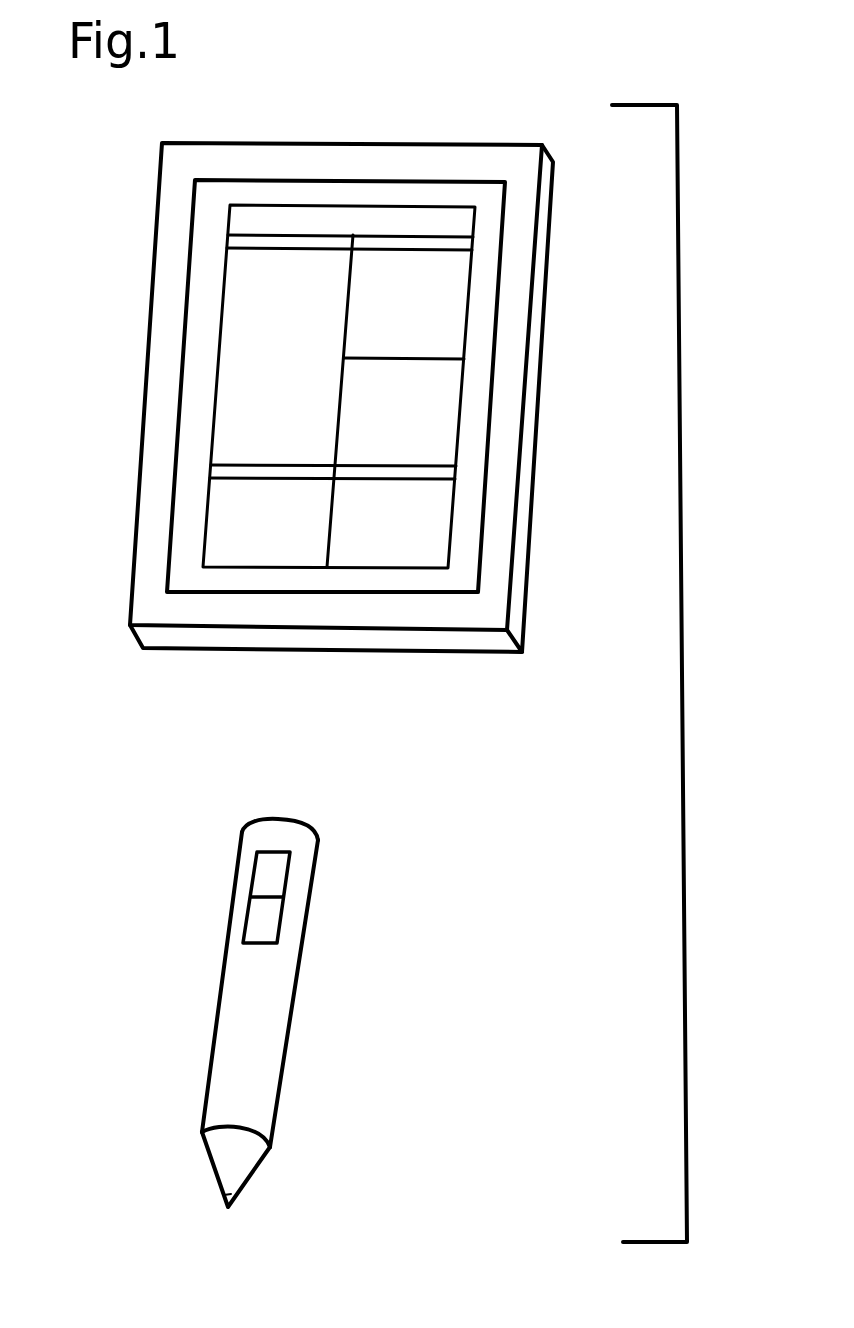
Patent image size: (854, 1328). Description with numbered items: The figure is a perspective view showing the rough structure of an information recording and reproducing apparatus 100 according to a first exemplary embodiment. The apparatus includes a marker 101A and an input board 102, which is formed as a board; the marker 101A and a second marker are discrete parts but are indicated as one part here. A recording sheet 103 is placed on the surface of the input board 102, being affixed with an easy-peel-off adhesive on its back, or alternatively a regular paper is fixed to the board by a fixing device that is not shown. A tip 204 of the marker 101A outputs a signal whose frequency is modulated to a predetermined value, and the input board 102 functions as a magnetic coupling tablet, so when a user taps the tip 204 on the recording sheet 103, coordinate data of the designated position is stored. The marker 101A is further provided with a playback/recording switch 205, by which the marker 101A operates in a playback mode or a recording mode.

The information recording and reproducing apparatus 100 is at (679, 673).
The input board 102 is at (193, 635).
The recording sheet 103 is at (268, 277).
The marker 101A is at (252, 1053).
The playback/recording switch 205 is at (265, 880).
The tip 204 is at (233, 1193).